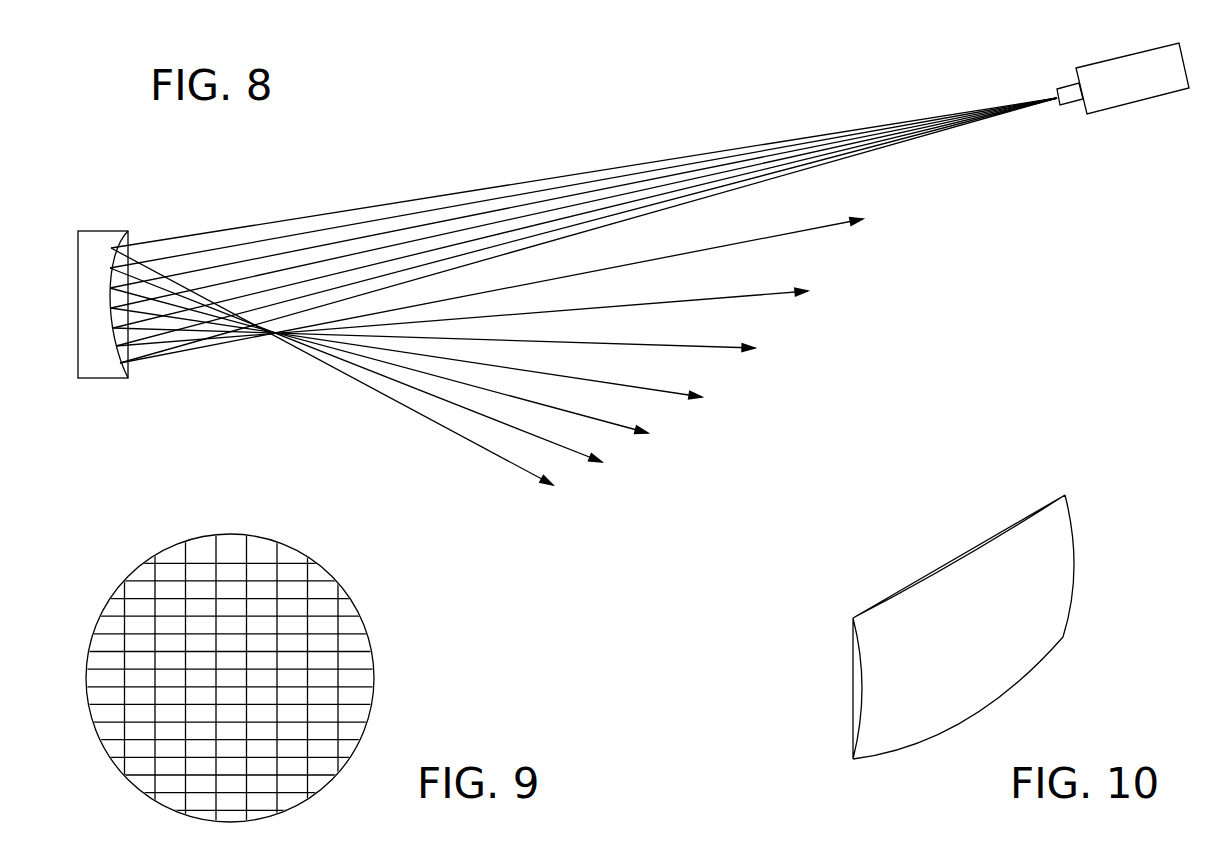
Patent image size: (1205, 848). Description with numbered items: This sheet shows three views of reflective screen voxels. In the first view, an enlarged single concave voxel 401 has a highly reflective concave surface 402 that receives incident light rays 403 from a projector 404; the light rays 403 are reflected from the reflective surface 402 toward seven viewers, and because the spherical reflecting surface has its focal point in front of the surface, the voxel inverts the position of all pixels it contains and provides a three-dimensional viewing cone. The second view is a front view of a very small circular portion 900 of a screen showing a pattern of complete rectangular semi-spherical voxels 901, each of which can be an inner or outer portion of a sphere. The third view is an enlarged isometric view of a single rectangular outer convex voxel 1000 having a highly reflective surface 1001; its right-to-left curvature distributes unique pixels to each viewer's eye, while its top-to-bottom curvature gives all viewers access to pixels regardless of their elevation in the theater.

In FIG. 8, the concave voxel 401 is at (103, 368).
In FIG. 8, the reflective concave surface 402 is at (131, 355).
In FIG. 8, the incident light rays 403 is at (832, 120).
In FIG. 8, the projector 404 is at (1127, 63).
In FIG. 9, the portion of a screen 900 is at (138, 545).
In FIG. 9, the rectangular semi-spherical voxels 901 is at (353, 713).
In FIG. 10, the rectangular outer convex voxel 1000 is at (937, 627).
In FIG. 10, the highly reflective surface 1001 is at (1036, 641).